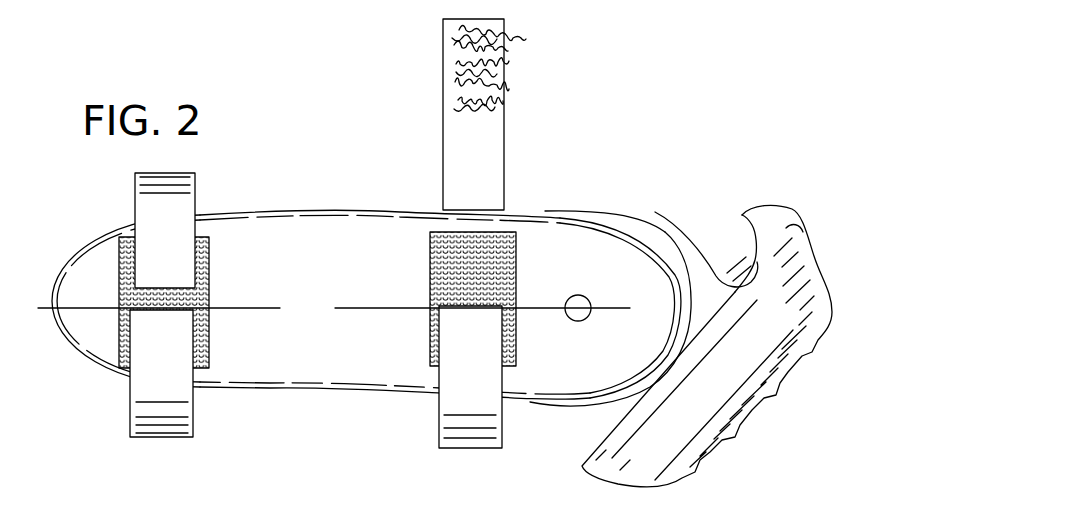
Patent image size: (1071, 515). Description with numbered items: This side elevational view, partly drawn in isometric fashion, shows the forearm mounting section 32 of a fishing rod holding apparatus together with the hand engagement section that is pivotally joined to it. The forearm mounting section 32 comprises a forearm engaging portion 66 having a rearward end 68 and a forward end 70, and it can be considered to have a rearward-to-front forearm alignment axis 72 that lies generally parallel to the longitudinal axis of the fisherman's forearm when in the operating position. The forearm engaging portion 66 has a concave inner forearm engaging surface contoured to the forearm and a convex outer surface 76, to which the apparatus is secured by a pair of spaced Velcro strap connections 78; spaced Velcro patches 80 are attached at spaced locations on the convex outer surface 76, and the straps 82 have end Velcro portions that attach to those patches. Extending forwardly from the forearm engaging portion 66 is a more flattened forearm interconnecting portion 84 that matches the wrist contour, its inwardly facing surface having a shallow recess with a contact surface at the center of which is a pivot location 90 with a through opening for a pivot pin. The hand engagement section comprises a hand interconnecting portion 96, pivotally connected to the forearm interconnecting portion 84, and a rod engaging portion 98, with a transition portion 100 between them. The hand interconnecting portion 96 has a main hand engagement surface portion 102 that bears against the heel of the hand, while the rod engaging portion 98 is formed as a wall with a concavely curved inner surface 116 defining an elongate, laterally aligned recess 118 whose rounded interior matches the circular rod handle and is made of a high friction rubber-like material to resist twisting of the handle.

The forearm mounting section 32 is at (262, 215).
The forearm engaging portion 66 is at (352, 215).
The rearward end 68 is at (74, 266).
The forward end 70 is at (665, 290).
The forearm alignment axis 72 is at (250, 306).
The convex outer surface 76 is at (354, 284).
The Velcro strap connection 78 is at (196, 186).
The Velcro patch 80 is at (210, 270).
The strap 82 is at (140, 190).
The forearm interconnecting portion 84 is at (492, 55).
The pivot location 90 is at (568, 318).
The hand interconnecting portion 96 is at (669, 241).
The rod engaging portion 98 is at (739, 270).
The transition portion 100 is at (591, 319).
The main hand engagement surface portion 102 is at (538, 213).
The concavely curved inner surface 116 is at (737, 262).
The recess 118 is at (728, 272).